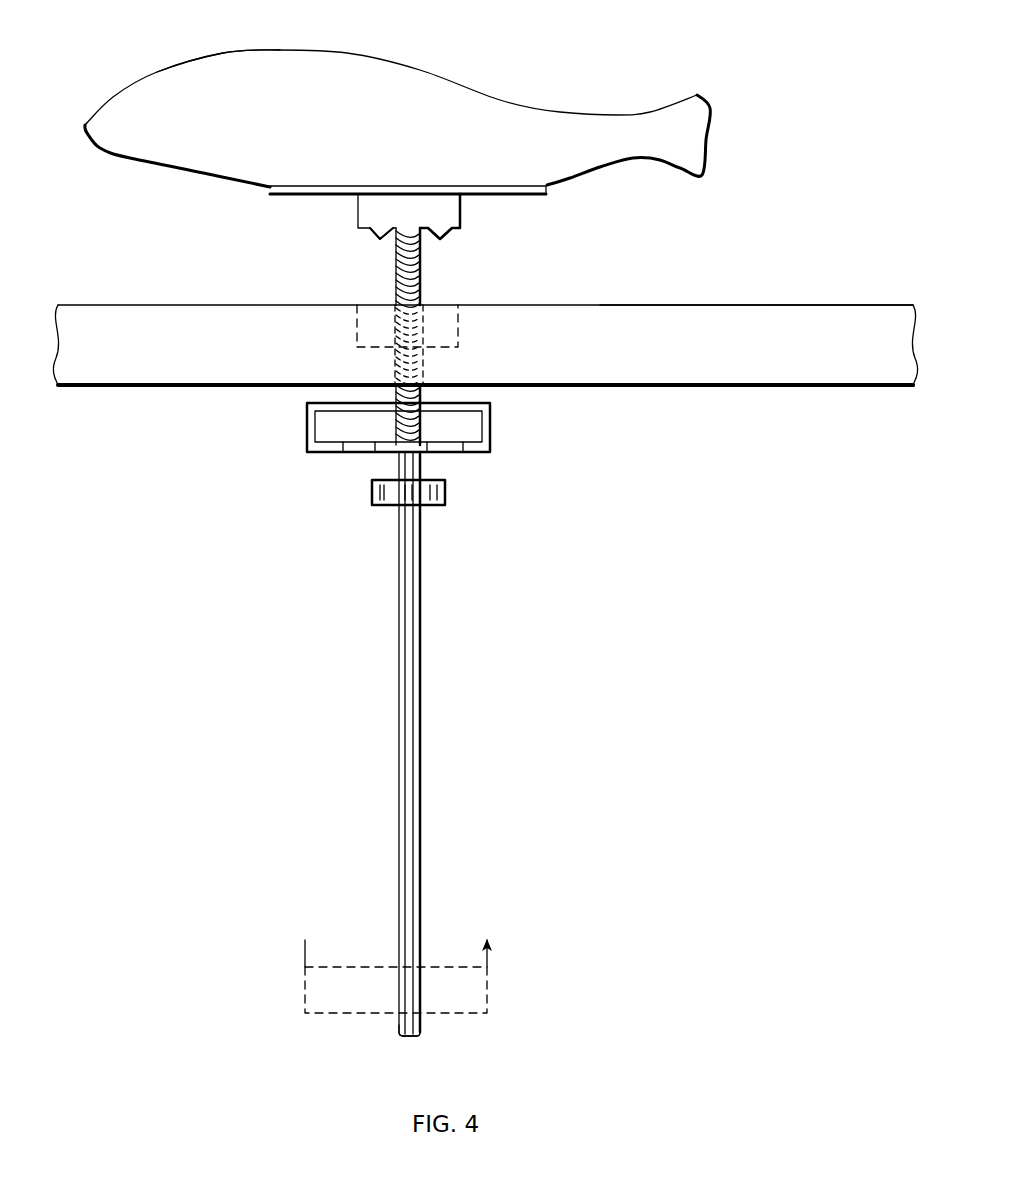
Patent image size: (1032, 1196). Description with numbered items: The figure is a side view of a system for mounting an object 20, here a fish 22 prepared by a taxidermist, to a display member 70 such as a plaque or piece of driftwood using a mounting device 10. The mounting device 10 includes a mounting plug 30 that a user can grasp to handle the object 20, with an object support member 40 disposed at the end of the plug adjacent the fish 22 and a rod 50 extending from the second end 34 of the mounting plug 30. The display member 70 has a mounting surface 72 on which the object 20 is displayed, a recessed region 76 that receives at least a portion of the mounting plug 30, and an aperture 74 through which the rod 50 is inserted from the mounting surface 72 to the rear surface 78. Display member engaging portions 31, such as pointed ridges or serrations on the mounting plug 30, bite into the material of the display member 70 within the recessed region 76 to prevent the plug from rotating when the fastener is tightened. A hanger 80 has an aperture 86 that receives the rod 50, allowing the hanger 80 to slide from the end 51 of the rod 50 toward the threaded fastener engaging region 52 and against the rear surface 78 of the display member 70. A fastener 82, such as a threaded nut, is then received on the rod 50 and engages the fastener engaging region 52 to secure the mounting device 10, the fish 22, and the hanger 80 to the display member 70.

The mounting device 10 is at (222, 265).
The object 20 is at (449, 64).
The fish 22 is at (224, 54).
The mounting plug 30 is at (362, 200).
The display member engaging portions 31 is at (450, 238).
The second end 34 is at (378, 269).
The object support member 40 is at (527, 195).
The rod 50 is at (423, 527).
The end of the rod 51 is at (421, 1036).
The fastener engaging region 52 is at (427, 277).
The display member 70 is at (826, 361).
The mounting surface 72 is at (813, 305).
The aperture 74 is at (425, 370).
The recessed region 76 is at (462, 332).
The rear surface 78 is at (776, 387).
The hanger 80 is at (508, 436).
The fastener 82 is at (372, 490).
The aperture of the hanger 86 is at (391, 420).